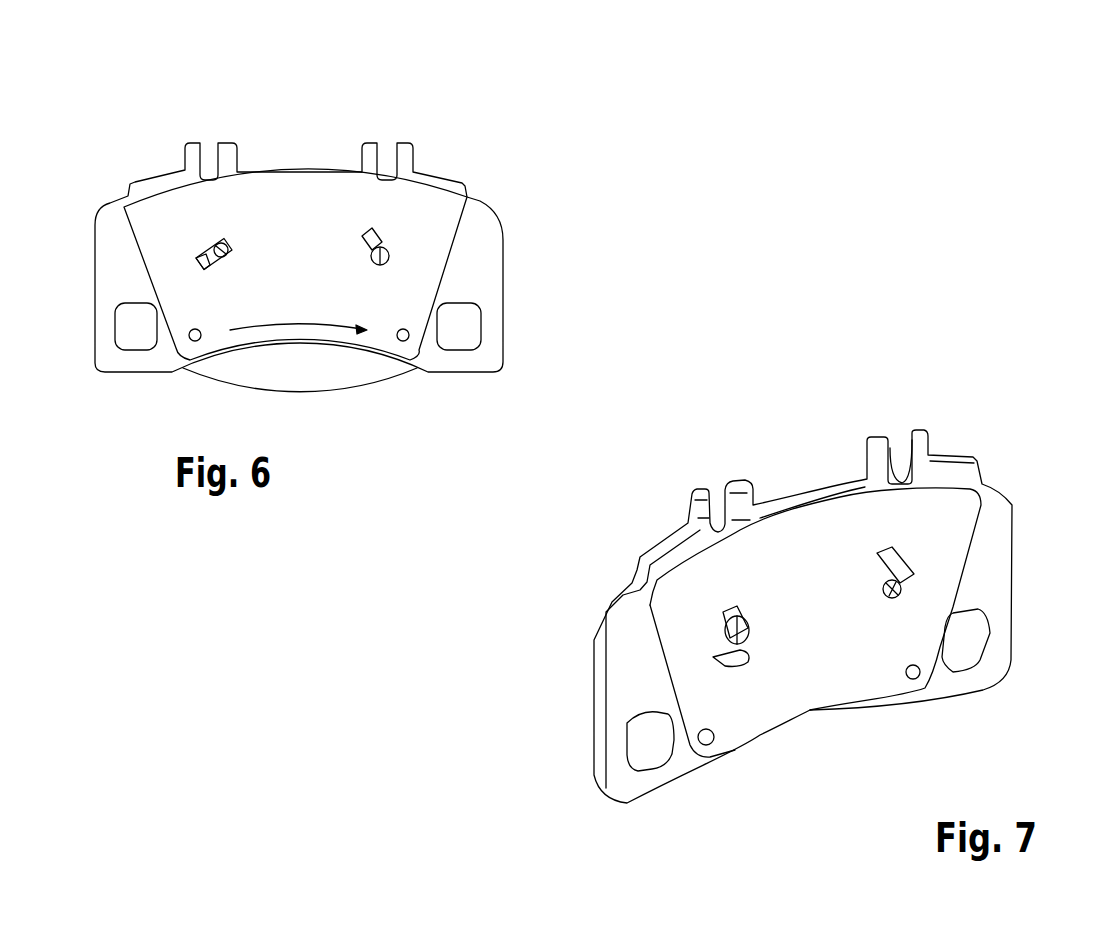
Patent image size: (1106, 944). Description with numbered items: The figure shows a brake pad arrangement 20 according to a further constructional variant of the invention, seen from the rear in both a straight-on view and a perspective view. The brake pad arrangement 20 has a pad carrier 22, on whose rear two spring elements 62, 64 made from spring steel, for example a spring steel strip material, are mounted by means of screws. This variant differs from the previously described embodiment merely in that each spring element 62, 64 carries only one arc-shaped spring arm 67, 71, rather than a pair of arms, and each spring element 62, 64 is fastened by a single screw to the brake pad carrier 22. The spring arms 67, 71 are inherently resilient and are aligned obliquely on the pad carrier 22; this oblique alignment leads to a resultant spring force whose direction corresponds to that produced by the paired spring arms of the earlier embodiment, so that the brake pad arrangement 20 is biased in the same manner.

In FIG. 6, the brake pad arrangement 20 is at (460, 181).
In FIG. 7, the brake pad arrangement 20 is at (972, 456).
In FIG. 6, the pad carrier 22 is at (503, 240).
In FIG. 7, the pad carrier 22 is at (1015, 520).
In FIG. 6, the spring element 62 is at (220, 242).
In FIG. 7, the spring element 62 is at (725, 629).
In FIG. 6, the spring element 64 is at (378, 265).
In FIG. 7, the spring element 64 is at (890, 598).
In FIG. 6, the spring arm 67 is at (197, 257).
In FIG. 7, the spring arm 67 is at (735, 668).
In FIG. 6, the spring arm 71 is at (372, 232).
In FIG. 7, the spring arm 71 is at (893, 567).